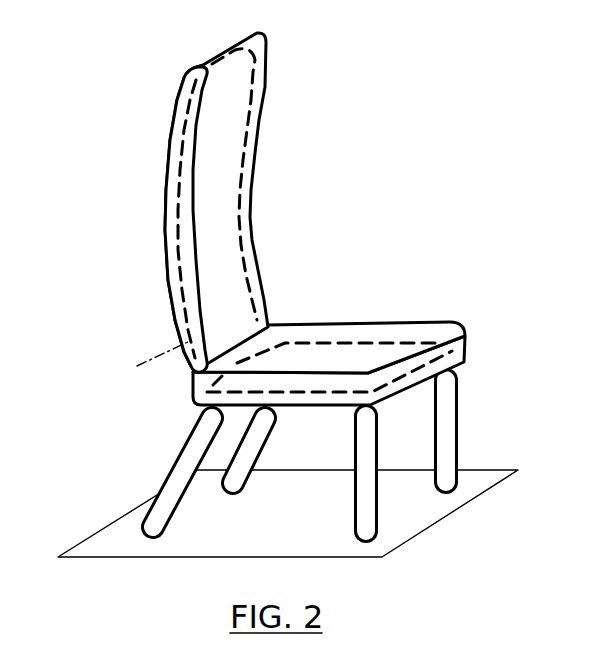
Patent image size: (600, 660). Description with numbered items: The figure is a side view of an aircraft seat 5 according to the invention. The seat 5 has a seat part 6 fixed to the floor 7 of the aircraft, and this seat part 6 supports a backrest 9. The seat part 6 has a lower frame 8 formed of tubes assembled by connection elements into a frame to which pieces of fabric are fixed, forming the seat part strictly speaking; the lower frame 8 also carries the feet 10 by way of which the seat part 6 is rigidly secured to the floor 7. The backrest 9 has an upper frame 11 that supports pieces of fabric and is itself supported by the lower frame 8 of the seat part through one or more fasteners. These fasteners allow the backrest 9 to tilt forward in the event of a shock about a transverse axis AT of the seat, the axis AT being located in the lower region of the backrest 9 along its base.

The aircraft seat 5 is at (283, 282).
The seat part 6 is at (329, 328).
The floor 7 is at (90, 552).
The lower frame 8 is at (325, 343).
The backrest 9 is at (217, 202).
The feet 10 is at (182, 480).
The upper frame 11 is at (238, 180).
The transverse axis AT is at (148, 357).